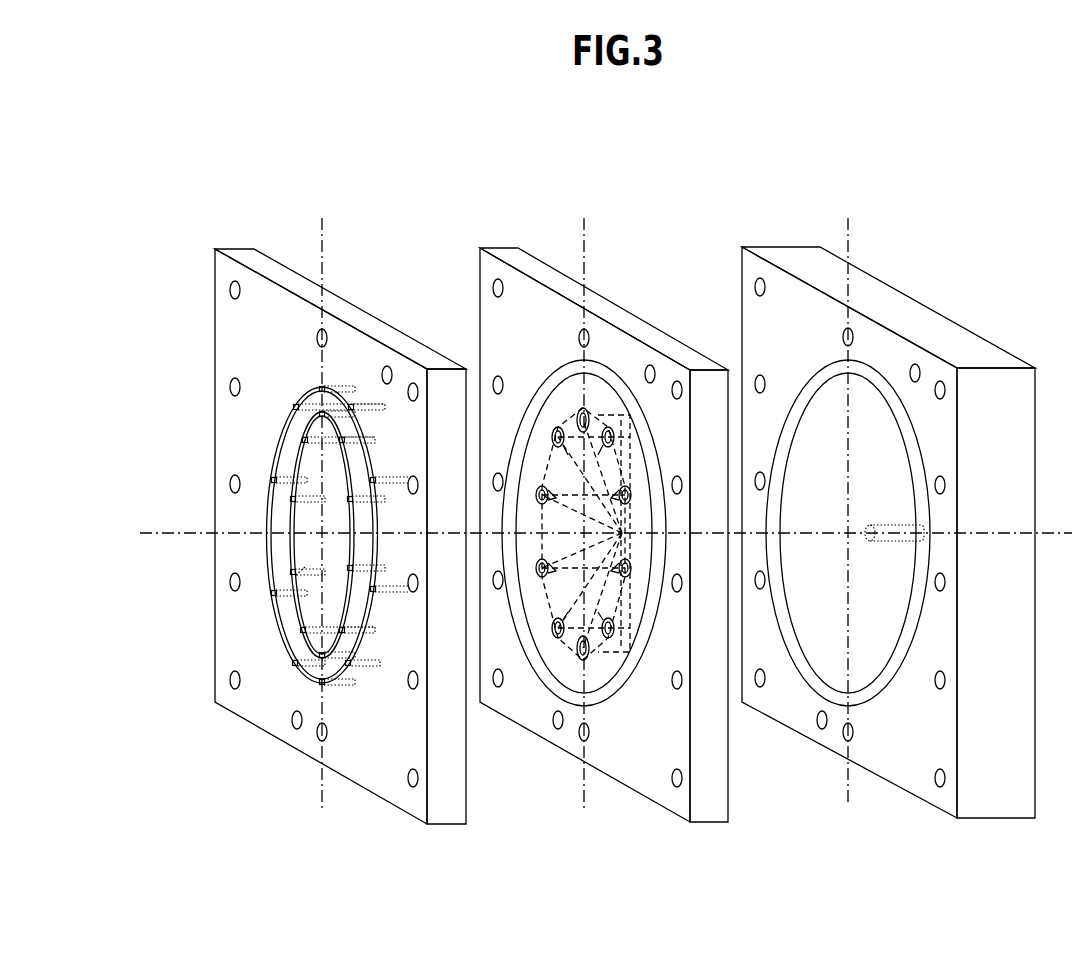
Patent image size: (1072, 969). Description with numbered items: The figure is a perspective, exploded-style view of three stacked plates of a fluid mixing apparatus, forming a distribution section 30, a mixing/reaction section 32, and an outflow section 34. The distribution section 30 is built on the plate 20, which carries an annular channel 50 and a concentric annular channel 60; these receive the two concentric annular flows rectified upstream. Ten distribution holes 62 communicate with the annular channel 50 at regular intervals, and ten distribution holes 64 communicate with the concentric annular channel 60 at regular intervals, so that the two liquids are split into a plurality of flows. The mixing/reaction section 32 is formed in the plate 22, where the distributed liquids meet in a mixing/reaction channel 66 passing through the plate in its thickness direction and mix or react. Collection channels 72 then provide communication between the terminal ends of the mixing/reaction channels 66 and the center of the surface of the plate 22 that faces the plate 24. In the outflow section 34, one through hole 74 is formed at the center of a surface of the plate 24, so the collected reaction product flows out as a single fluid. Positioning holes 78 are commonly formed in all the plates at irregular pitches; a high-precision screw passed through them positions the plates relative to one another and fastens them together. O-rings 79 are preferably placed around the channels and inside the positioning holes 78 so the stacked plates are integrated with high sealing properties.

The plate 20 is at (410, 821).
The plate 22 is at (676, 818).
The plate 24 is at (938, 814).
The distribution section 30 is at (337, 200).
The mixing/reaction section 32 is at (597, 200).
The outflow section 34 is at (862, 200).
The annular channel 50 is at (333, 393).
The concentric annular channel 60 is at (304, 394).
The distribution holes 62 is at (371, 663).
The distribution holes 64 is at (316, 508).
The mixing/reaction channel 66 is at (598, 413).
The collection channels 72 is at (647, 443).
The through hole 74 is at (885, 541).
The positioning holes 78 is at (940, 382).
The O-rings 79 is at (548, 695).